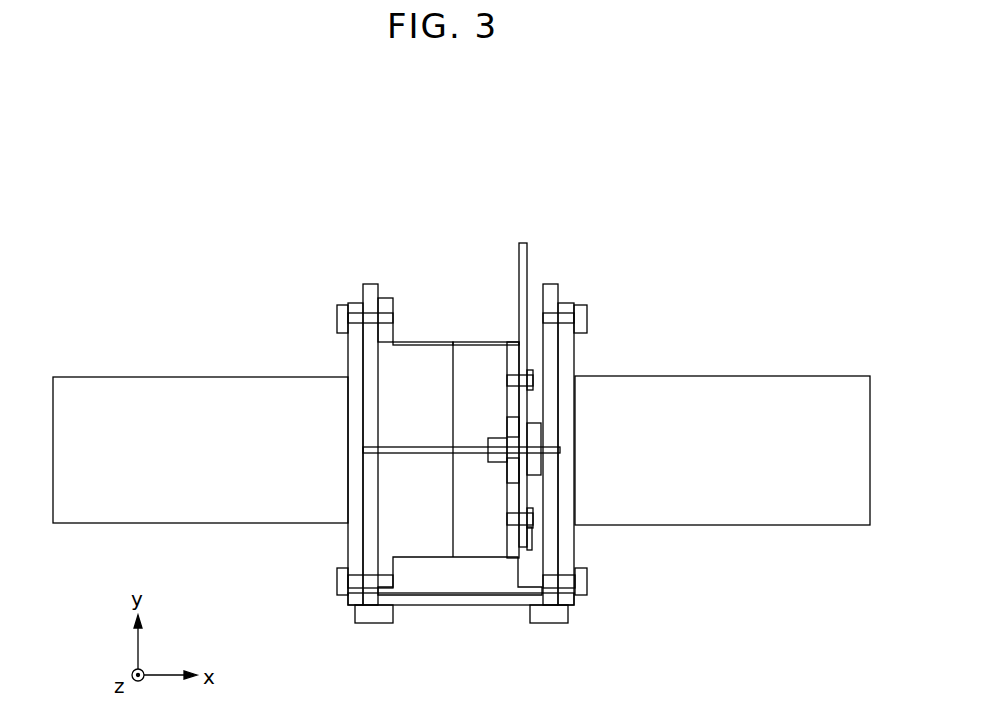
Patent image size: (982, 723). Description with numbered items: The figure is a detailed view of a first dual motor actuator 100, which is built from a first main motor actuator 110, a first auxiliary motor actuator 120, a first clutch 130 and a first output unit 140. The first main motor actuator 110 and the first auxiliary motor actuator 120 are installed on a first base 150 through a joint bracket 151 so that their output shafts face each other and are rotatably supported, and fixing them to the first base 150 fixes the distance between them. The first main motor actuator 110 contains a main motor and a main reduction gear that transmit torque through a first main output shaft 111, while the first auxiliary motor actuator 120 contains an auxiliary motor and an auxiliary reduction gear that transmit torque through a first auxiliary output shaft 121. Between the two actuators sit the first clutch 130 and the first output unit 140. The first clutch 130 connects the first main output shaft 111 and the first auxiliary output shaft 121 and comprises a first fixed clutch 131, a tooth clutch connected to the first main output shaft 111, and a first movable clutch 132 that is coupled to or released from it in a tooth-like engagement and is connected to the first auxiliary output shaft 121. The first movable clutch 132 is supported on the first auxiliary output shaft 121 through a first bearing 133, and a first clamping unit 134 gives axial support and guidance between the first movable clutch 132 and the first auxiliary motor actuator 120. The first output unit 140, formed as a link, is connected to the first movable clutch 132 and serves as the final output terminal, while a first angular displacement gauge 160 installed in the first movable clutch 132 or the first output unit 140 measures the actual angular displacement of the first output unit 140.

The first dual motor actuator 100 is at (729, 190).
The first main motor actuator 110 is at (150, 386).
The first main output shaft 111 is at (418, 450).
The first auxiliary motor actuator 120 is at (792, 386).
The first auxiliary output shaft 121 is at (548, 448).
The first clutch 130 is at (452, 580).
The first fixed clutch 131 is at (420, 543).
The first movable clutch 132 is at (480, 543).
The first bearing 133 is at (515, 467).
The first clamping unit 134 is at (527, 400).
The first output unit 140 is at (523, 262).
The first base 150 is at (373, 352).
The joint bracket 151 is at (372, 623).
The first angular displacement gauge 160 is at (495, 437).